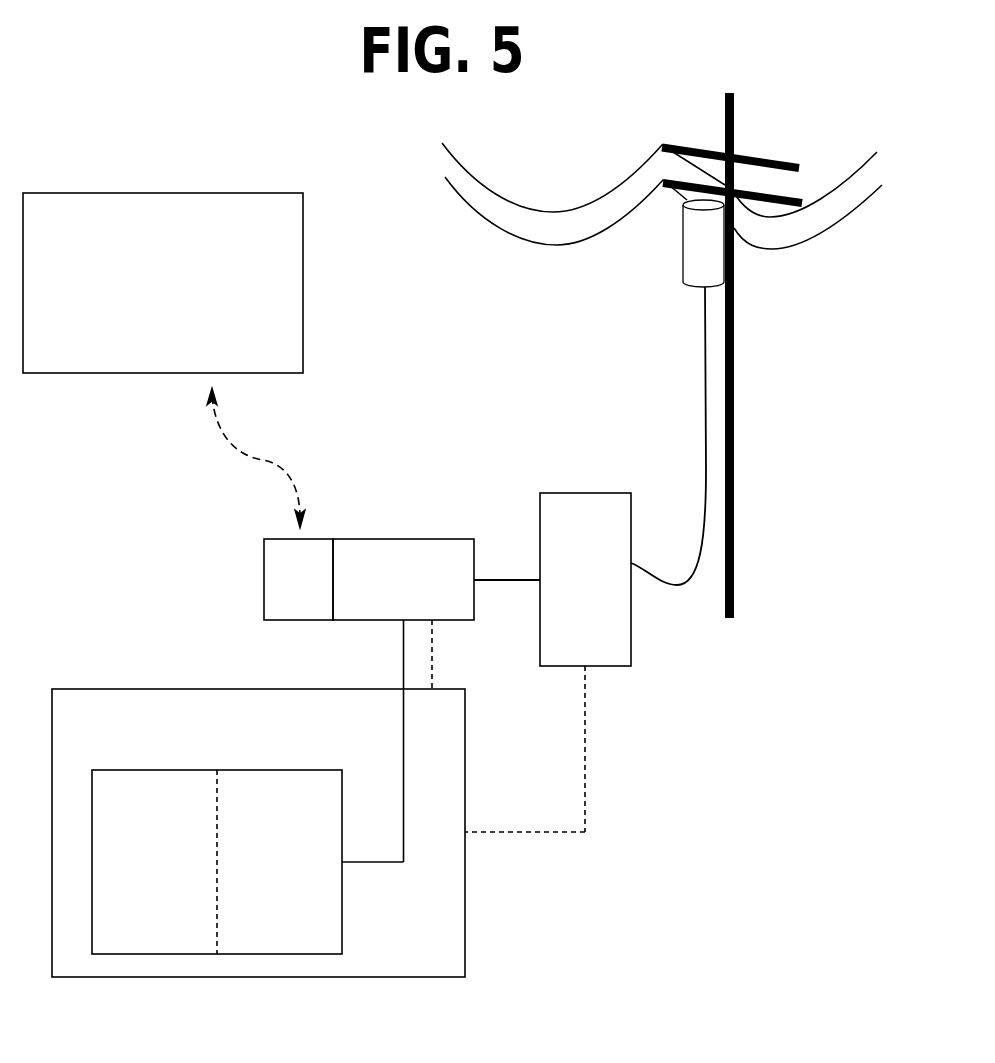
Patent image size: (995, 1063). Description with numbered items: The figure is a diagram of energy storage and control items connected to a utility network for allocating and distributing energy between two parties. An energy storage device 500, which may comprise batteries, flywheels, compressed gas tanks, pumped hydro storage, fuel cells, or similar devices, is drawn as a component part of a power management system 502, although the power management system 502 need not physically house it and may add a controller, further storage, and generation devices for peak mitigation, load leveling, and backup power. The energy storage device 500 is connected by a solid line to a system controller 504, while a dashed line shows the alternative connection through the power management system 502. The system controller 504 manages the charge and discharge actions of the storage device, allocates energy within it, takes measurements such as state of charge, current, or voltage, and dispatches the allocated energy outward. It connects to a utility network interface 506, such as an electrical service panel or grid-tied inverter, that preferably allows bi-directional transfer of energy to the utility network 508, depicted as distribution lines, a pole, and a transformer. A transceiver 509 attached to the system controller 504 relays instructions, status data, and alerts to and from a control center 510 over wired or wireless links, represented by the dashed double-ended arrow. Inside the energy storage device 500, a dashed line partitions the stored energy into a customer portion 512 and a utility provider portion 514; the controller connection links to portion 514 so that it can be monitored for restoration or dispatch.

The energy storage device 500 is at (288, 770).
The power management system 502 is at (384, 946).
The system controller 504 is at (386, 590).
The utility network interface 506 is at (568, 590).
The utility network 508 is at (610, 250).
The transceiver 509 is at (281, 590).
The control center 510 is at (146, 296).
The portion 512 is at (138, 872).
The portion 514 is at (258, 872).